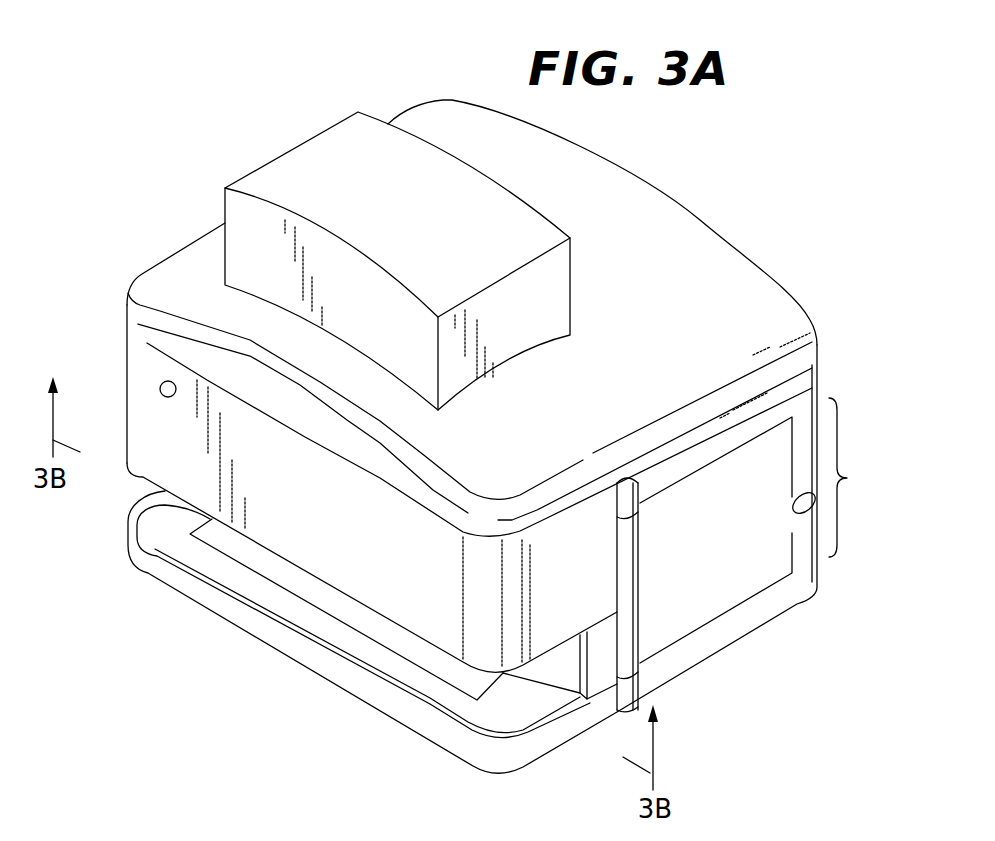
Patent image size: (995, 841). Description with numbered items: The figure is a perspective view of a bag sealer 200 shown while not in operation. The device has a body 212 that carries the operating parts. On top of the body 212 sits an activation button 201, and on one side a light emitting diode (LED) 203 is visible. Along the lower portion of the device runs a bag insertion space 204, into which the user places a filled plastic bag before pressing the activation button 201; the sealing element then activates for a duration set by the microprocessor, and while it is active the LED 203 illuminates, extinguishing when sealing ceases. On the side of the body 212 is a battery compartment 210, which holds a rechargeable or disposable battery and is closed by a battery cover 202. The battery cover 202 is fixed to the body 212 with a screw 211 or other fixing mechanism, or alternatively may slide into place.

The bag sealer 200 is at (95, 296).
The activation button 201 is at (302, 178).
The battery cover 202 is at (728, 558).
The light emitting diode (LED) 203 is at (160, 391).
The bag insertion space 204 is at (120, 460).
The battery compartment 210 is at (847, 478).
The screw 211 is at (807, 505).
The body 212 is at (697, 257).